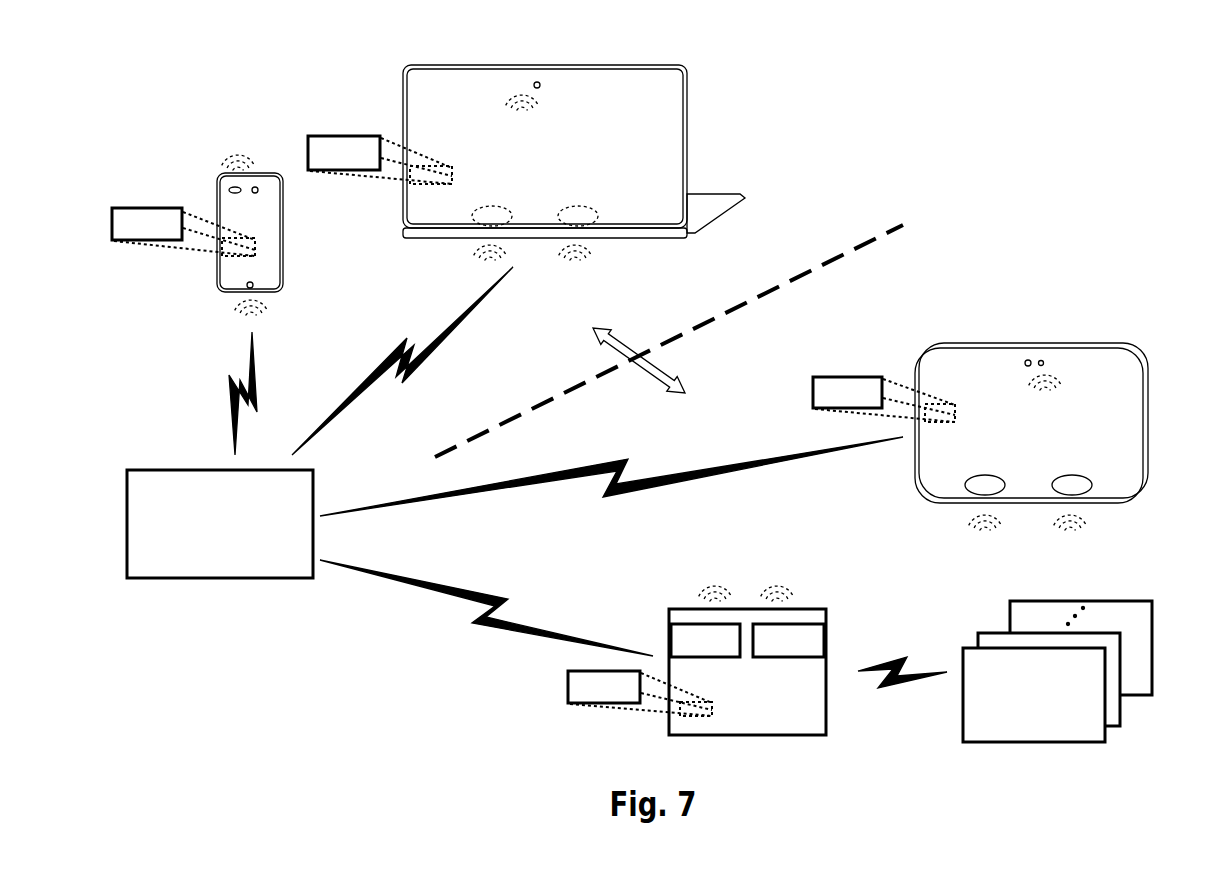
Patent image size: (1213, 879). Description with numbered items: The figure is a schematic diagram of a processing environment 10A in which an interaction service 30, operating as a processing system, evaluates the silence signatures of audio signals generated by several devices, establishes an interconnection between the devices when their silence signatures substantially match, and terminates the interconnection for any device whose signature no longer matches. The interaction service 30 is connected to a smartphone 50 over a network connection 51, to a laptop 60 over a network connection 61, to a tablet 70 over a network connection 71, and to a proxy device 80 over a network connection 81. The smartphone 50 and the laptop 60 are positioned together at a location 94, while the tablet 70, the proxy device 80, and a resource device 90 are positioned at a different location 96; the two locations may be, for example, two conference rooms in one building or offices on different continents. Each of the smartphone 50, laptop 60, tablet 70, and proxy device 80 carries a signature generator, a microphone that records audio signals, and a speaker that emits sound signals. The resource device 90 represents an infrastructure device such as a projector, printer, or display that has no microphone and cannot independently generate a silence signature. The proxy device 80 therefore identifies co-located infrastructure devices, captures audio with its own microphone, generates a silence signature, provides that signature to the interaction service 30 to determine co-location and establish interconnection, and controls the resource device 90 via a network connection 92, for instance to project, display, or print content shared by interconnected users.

The processing environment 10A is at (304, 700).
The interaction service 30 is at (171, 590).
The smartphone 50 is at (285, 270).
The network connection 51 is at (258, 378).
The laptop 60 is at (742, 212).
The network connection 61 is at (420, 365).
The tablet 70 is at (1147, 468).
The network connection 71 is at (646, 497).
The proxy device 80 is at (780, 737).
The network connection 81 is at (500, 633).
The resource device 90 is at (1138, 745).
The network connection 92 is at (883, 688).
The location 94 is at (755, 143).
The location 96 is at (1000, 277).